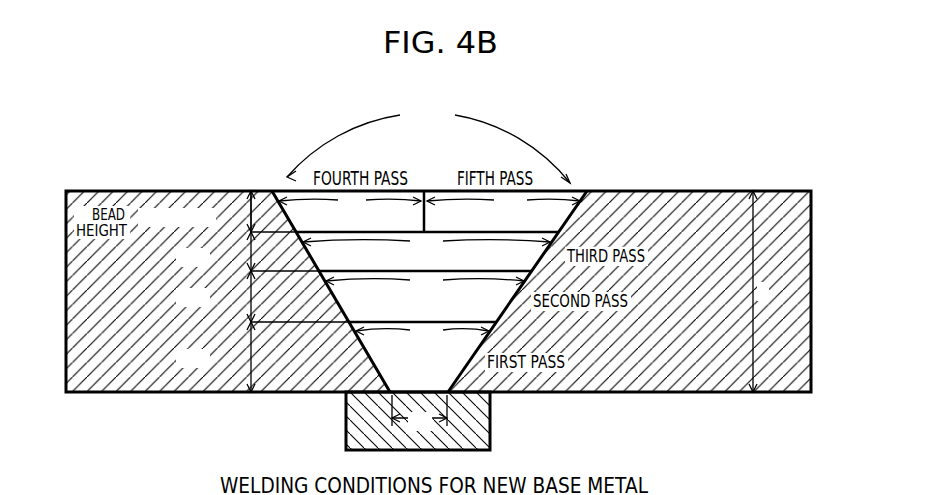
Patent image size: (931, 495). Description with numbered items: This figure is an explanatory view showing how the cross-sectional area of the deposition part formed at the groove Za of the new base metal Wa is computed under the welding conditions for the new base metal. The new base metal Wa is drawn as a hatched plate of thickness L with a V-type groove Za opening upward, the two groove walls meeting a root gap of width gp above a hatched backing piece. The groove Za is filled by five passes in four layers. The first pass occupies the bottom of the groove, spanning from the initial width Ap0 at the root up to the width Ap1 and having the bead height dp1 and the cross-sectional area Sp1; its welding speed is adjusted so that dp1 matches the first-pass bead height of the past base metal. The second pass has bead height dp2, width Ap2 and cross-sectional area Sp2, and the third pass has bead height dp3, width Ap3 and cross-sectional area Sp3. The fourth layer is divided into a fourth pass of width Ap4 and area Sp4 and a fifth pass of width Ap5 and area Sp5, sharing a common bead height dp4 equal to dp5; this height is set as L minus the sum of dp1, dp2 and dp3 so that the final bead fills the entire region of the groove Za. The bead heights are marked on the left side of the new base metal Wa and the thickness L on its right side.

The new base metal Wa is at (123, 191).
The groove Za is at (590, 131).
The plate thickness L is at (758, 291).
The gap width gp is at (419, 413).
The bead height of the first pass dp1 is at (216, 357).
The bead height of the second pass dp2 is at (263, 296).
The bead height of the third pass dp3 is at (248, 251).
The bead height of the fourth pass dp4 is at (218, 211).
The bead height of the fifth pass dp5 is at (214, 211).
The initial groove width Ap0 is at (427, 380).
The bead width of the first layer Ap1 is at (422, 337).
The bead width of the second pass Ap2 is at (425, 286).
The bead width of the third pass Ap3 is at (426, 247).
The bead width of the fourth pass Ap4 is at (350, 206).
The bead width of the fifth pass Ap5 is at (503, 206).
The bead cross-sectional area of the first pass Sp1 is at (427, 358).
The bead cross-sectional area of the second pass Sp2 is at (427, 307).
The bead cross-sectional area of the third pass Sp3 is at (427, 261).
The bead cross-sectional area of the fourth pass Sp4 is at (355, 222).
The bead cross-sectional area of the fifth pass Sp5 is at (510, 222).